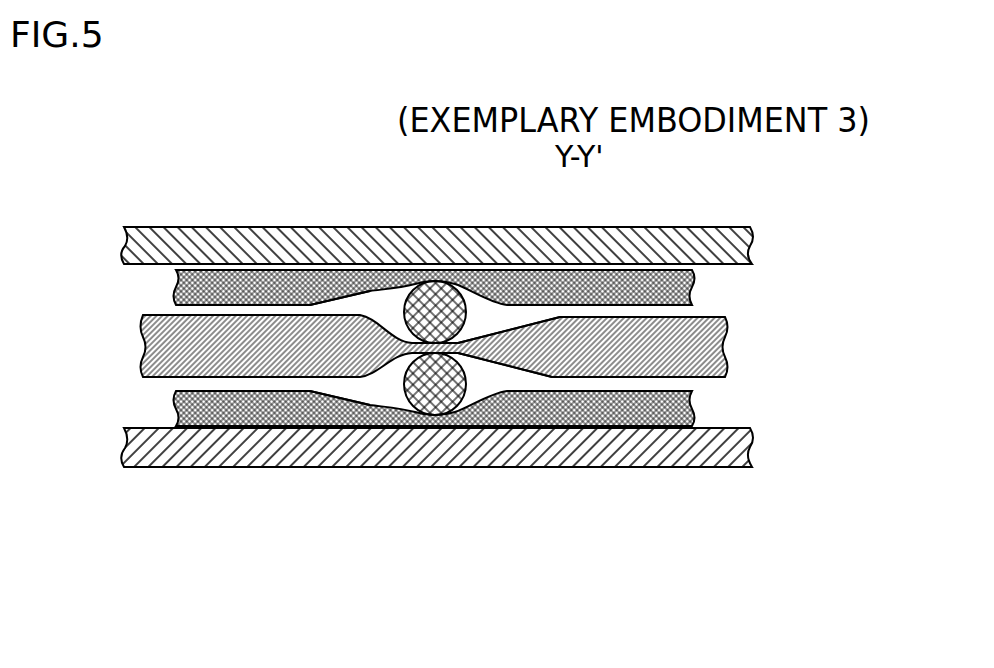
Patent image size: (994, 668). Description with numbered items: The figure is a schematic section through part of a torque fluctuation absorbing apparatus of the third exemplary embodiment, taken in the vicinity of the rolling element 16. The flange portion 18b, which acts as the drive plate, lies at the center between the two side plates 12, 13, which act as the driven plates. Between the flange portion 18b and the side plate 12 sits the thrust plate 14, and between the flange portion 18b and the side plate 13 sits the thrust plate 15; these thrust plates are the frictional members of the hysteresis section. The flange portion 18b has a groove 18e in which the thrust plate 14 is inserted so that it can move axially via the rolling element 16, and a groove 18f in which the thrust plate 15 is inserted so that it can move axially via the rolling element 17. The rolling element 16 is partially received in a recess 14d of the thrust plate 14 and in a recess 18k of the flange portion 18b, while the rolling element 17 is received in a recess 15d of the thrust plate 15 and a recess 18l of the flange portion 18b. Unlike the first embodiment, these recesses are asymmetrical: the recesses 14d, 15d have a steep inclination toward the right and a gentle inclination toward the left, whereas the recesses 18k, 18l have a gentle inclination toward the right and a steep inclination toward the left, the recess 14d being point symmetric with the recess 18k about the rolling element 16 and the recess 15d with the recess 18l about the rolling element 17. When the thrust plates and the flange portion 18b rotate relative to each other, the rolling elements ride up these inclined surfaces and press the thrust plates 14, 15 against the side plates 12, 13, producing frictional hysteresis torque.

The side plate 12 is at (215, 243).
The side plate 13 is at (217, 447).
The thrust plate 14 is at (275, 276).
The recess 14d is at (364, 293).
The thrust plate 15 is at (273, 407).
The recess 15d is at (364, 400).
The rolling element 16 is at (435, 300).
The rolling element 17 is at (435, 397).
The flange portion 18b is at (637, 338).
The groove 18e is at (590, 312).
The groove 18f is at (590, 382).
The recess 18k is at (513, 328).
The recess 18l is at (513, 368).